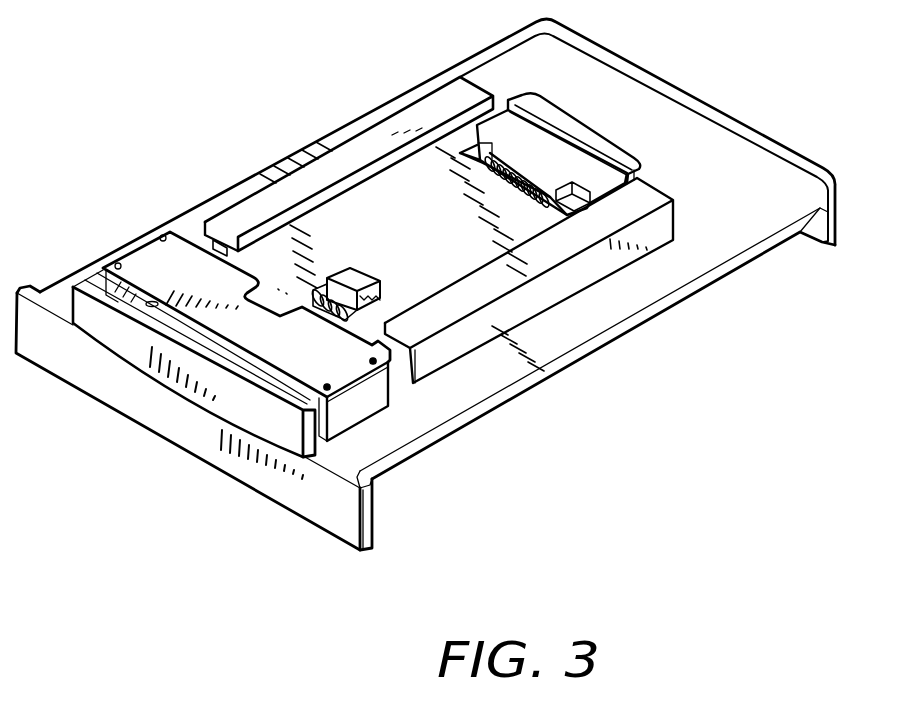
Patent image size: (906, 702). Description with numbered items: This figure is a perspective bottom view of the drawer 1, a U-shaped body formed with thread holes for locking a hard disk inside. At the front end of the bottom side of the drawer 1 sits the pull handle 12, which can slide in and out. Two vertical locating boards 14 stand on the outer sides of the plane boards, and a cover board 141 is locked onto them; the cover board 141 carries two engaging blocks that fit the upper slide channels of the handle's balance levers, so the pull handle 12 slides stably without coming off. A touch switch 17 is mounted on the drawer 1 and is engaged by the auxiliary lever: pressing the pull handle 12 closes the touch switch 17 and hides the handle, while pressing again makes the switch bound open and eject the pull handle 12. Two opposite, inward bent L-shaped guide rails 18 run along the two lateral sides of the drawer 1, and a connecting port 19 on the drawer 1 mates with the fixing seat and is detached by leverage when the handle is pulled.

The drawer 1 is at (522, 380).
The pull handle 12 is at (173, 379).
The vertical locating board 14 is at (353, 407).
The cover board 141 is at (183, 258).
The touch switch 17 is at (355, 276).
The L-shaped guide rail 18 is at (334, 163).
The connecting port 19 is at (600, 140).